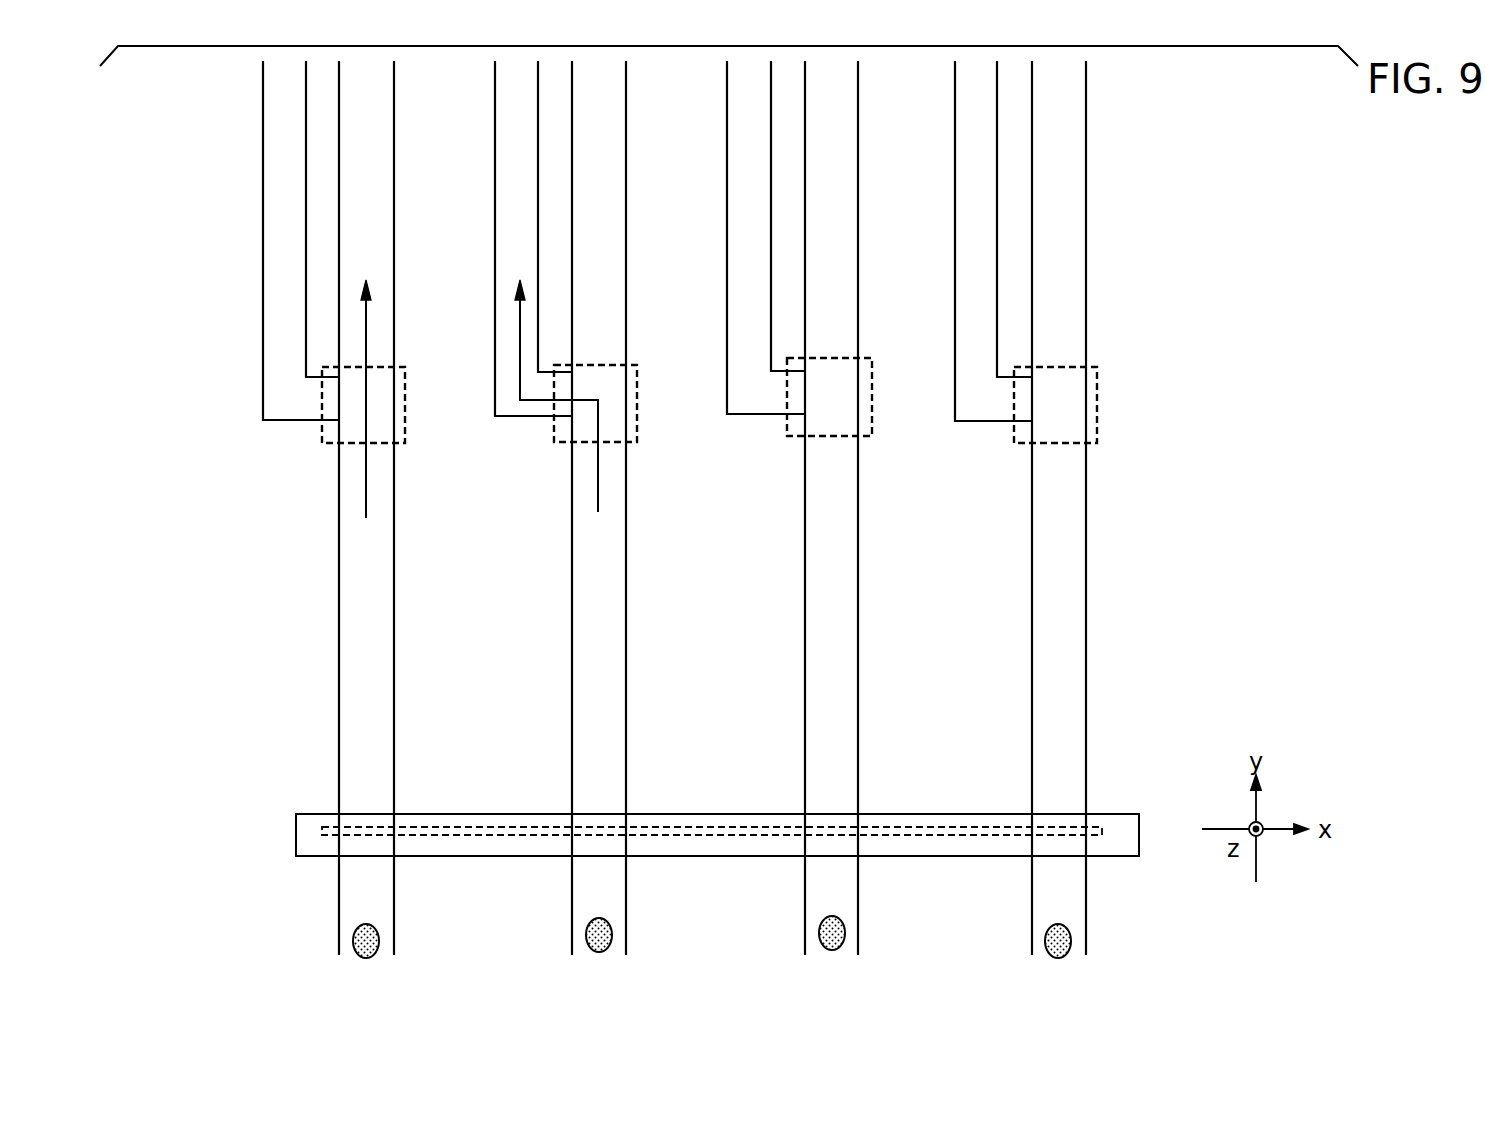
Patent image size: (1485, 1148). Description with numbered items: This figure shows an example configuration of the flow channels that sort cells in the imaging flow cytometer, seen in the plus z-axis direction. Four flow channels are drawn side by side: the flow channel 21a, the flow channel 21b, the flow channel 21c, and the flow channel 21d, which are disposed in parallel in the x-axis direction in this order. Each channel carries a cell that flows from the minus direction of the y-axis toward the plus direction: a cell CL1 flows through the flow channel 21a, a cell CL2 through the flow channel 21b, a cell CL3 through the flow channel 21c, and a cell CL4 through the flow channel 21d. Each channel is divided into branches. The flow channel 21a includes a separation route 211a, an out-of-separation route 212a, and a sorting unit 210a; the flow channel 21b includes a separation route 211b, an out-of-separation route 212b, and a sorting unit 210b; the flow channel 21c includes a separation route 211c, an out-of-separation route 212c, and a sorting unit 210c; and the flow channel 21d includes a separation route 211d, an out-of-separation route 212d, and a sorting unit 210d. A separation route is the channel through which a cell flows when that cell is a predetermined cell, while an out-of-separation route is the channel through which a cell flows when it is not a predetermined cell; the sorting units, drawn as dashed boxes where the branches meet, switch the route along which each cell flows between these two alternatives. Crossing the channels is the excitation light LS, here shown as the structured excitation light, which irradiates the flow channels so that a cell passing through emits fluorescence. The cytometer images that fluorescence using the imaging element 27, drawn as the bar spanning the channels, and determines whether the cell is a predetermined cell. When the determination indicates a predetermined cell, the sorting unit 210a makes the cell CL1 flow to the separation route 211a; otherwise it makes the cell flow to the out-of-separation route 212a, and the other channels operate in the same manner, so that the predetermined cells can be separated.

The flow channel 21a is at (315, 508).
The flow channel 21b is at (557, 508).
The flow channel 21c is at (795, 508).
The flow channel 21d is at (1027, 508).
The separation route 211a is at (278, 217).
The separation route 211b is at (497, 112).
The separation route 211c is at (742, 216).
The separation route 211d is at (963, 115).
The out-of-separation route 212a is at (375, 216).
The out-of-separation route 212b is at (610, 110).
The out-of-separation route 212c is at (845, 215).
The out-of-separation route 212d is at (1062, 108).
The sorting unit 210a is at (405, 420).
The sorting unit 210b is at (637, 420).
The sorting unit 210c is at (872, 418).
The sorting unit 210d is at (1097, 420).
The imaging element 27 is at (304, 814).
The excitation light LS is at (1100, 827).
The cell CL1 is at (379, 941).
The cell CL2 is at (612, 935).
The cell CL3 is at (845, 933).
The cell CL4 is at (1071, 941).